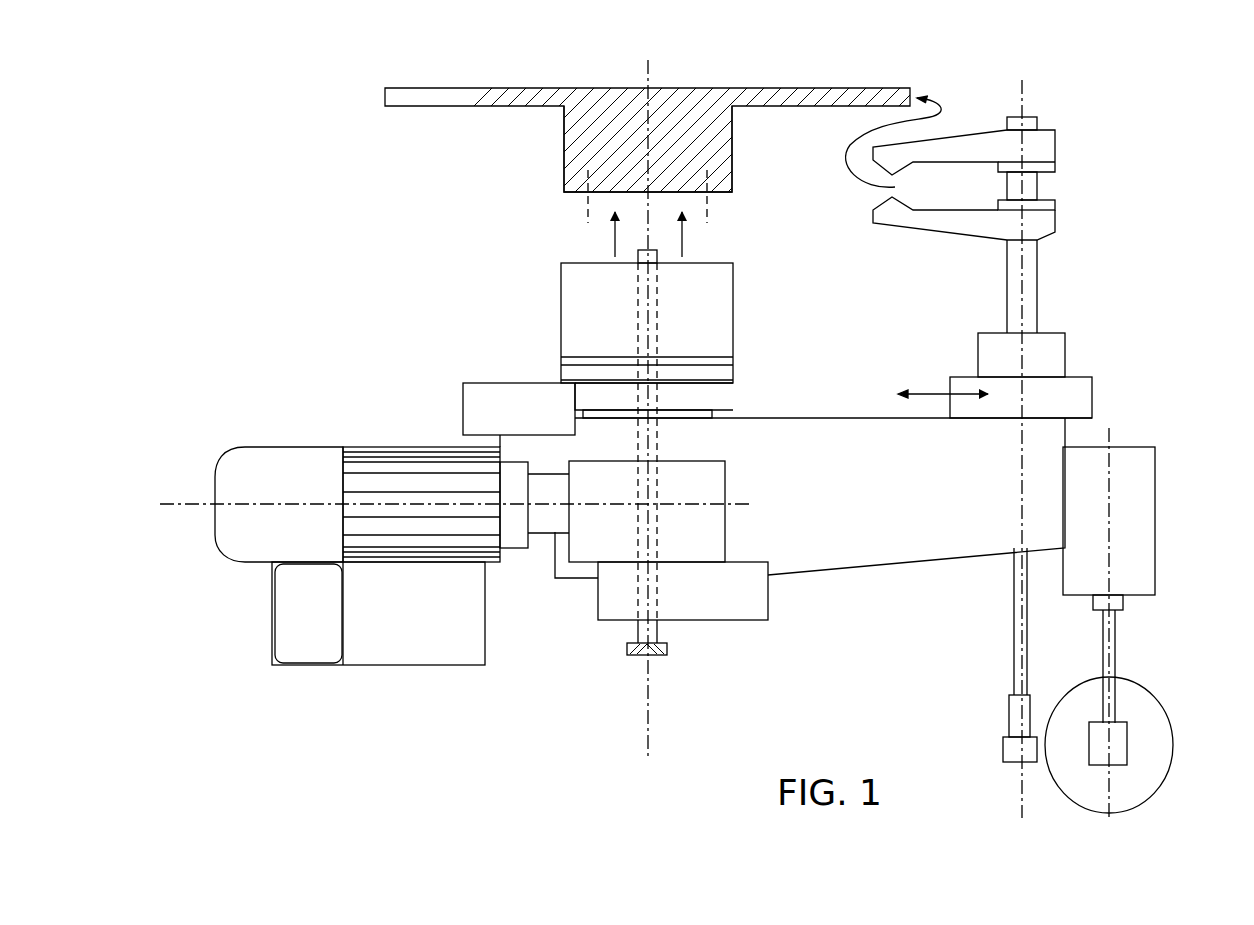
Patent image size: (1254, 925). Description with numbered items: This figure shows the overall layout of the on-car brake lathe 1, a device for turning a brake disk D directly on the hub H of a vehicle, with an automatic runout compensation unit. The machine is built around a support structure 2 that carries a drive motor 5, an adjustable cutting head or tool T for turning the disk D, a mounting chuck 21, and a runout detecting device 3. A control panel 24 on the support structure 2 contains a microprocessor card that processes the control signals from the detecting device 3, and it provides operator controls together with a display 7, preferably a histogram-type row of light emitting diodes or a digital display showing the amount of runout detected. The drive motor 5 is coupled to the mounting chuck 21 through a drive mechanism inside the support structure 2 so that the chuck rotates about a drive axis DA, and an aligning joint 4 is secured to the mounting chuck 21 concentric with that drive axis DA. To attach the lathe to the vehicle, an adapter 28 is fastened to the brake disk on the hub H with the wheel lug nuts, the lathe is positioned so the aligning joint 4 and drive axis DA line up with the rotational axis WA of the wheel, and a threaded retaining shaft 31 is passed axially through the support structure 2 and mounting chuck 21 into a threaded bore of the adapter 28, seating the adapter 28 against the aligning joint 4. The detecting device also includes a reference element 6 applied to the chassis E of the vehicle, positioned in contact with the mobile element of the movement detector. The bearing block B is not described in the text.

The on-car brake lathe 1 is at (343, 285).
The support structure 2 is at (853, 520).
The runout detecting device 3 is at (1132, 497).
The aligning joint 4 is at (727, 374).
The drive motor 5 is at (312, 485).
The reference element 6 is at (1112, 653).
The display 7 is at (302, 627).
The mounting chuck 21 is at (722, 395).
The control panel 24 is at (452, 650).
The adapter 28 is at (717, 309).
The threaded retaining shaft 31 is at (633, 627).
The bearing block B is at (530, 393).
The brake disk D is at (847, 87).
The chassis E is at (1160, 755).
The hub H is at (603, 137).
The tool T is at (1042, 143).
The rotational axis WA is at (647, 73).
The drive axis DA is at (650, 720).